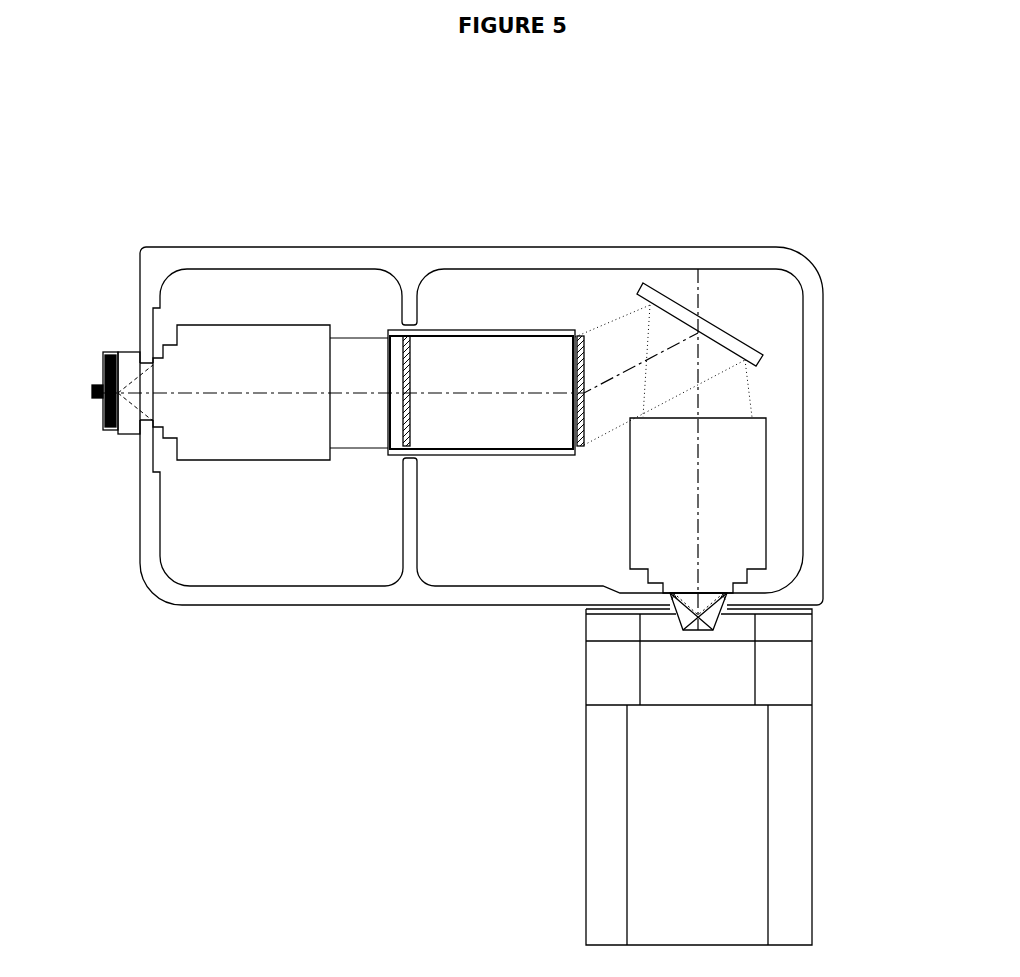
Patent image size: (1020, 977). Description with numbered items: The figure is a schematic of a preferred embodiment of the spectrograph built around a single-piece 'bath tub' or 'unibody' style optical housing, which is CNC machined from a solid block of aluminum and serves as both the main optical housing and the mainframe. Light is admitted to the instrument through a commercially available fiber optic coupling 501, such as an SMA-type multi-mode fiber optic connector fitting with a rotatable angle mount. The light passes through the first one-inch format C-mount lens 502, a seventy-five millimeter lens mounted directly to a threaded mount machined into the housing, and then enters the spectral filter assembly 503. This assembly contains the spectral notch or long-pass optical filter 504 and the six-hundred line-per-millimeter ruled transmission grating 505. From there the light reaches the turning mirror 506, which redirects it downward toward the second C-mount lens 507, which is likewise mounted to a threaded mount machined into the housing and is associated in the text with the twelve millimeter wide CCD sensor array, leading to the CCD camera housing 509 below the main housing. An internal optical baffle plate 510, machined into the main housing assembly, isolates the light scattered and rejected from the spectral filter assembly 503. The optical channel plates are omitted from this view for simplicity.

The fiber optic coupling 501 is at (93, 377).
The C-mount lens 502 is at (233, 323).
The spectral filter assembly 503 is at (482, 327).
The spectral notch or long-pass optical filter 504 is at (398, 358).
The ruled transmission grating 505 is at (583, 338).
The turning mirror 506 is at (724, 328).
The C-mount lens / CCD sensor array 507 is at (767, 487).
The CCD camera housing 509 is at (812, 670).
The internal optical baffle plate 510 is at (417, 505).